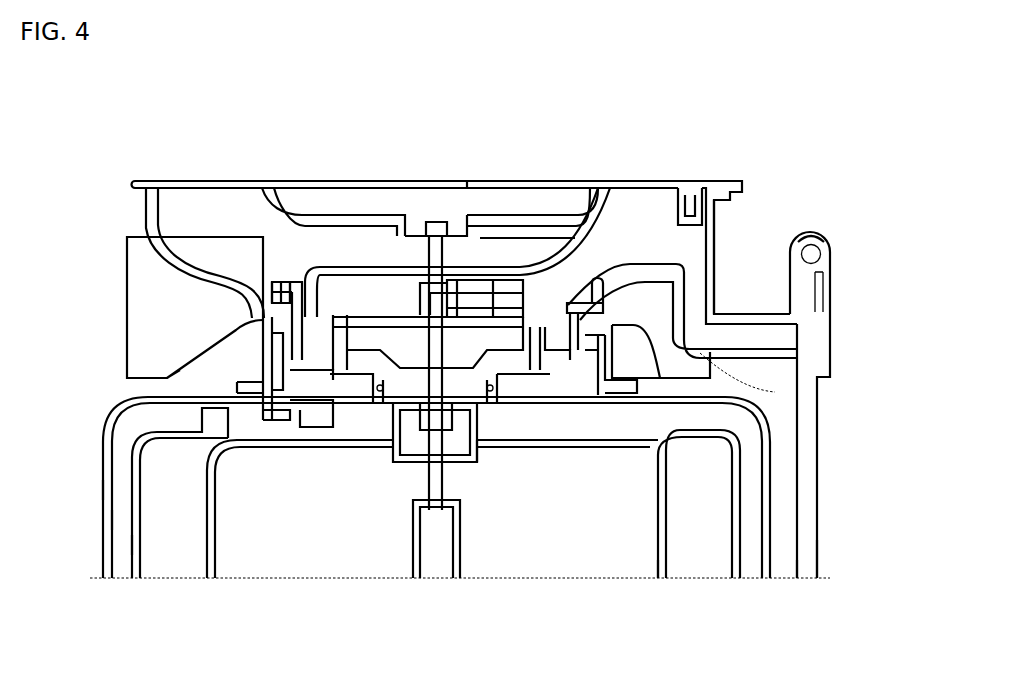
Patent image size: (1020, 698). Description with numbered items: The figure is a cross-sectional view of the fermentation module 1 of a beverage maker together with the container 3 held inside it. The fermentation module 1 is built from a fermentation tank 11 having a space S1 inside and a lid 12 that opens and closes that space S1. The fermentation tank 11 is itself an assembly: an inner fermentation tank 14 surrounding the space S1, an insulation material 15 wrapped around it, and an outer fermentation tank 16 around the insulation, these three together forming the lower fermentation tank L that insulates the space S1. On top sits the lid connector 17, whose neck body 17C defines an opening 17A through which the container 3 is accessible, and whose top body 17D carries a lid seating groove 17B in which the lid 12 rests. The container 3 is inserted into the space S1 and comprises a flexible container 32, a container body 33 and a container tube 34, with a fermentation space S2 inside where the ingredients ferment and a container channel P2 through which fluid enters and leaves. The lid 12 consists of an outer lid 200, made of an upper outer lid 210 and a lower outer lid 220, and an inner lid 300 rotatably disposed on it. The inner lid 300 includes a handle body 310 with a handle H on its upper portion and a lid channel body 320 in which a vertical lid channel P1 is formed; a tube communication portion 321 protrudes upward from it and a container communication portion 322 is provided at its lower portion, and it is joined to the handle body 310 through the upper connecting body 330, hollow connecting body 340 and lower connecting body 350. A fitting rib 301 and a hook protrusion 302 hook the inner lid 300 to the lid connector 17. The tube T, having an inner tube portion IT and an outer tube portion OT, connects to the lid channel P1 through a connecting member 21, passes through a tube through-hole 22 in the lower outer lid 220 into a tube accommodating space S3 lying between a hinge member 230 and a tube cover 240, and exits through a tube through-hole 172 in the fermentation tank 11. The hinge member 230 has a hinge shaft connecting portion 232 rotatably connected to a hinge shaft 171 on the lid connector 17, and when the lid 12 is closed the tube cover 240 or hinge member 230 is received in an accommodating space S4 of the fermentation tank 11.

The fermentation module 1 is at (790, 162).
The container 3 is at (450, 628).
The fermentation tank 11 is at (97, 446).
The lid 12 is at (137, 147).
The inner fermentation tank 14 is at (140, 546).
The insulation material 15 is at (118, 519).
The outer fermentation tank 16 is at (106, 493).
The lid connector 17 is at (78, 310).
The opening 17A is at (282, 345).
The lid seating groove 17B is at (190, 233).
The neck body 17C is at (282, 368).
The top body 17D is at (127, 323).
The connecting member 21 is at (430, 222).
The tube through-hole 22 is at (822, 324).
The flexible container 32 is at (650, 565).
The container body 33 is at (473, 467).
The container tube 34 is at (456, 565).
The hinge shaft 171 is at (822, 253).
The tube through-hole 172 is at (757, 385).
The outer lid 200 is at (75, 168).
The upper outer lid 210 is at (140, 183).
The lower outer lid 220 is at (148, 212).
The hinge member 230 is at (716, 225).
The hinge shaft connecting portion 232 is at (810, 236).
The tube cover 240 is at (795, 353).
The inner lid 300 is at (250, 103).
The fitting rib 301 is at (562, 245).
The hook protrusion 302 is at (617, 303).
The handle body 310 is at (368, 330).
The lid channel body 320 is at (358, 345).
The tube communication portion 321 is at (405, 312).
The container communication portion 322 is at (433, 427).
The upper connecting body 330 is at (328, 312).
The hollow connecting body 340 is at (256, 300).
The lower connecting body 350 is at (295, 300).
The handle H is at (480, 185).
The inner tube portion IT is at (552, 255).
The lower fermentation tank L is at (66, 483).
The outer tube portion OT is at (797, 560).
The lid channel P1 is at (430, 377).
The container channel P2 is at (430, 447).
The space S1 is at (178, 545).
The fermentation space S2 is at (260, 545).
The tube accommodating space S3 is at (818, 292).
The accommodating space S4 is at (770, 380).
The tube T is at (825, 557).